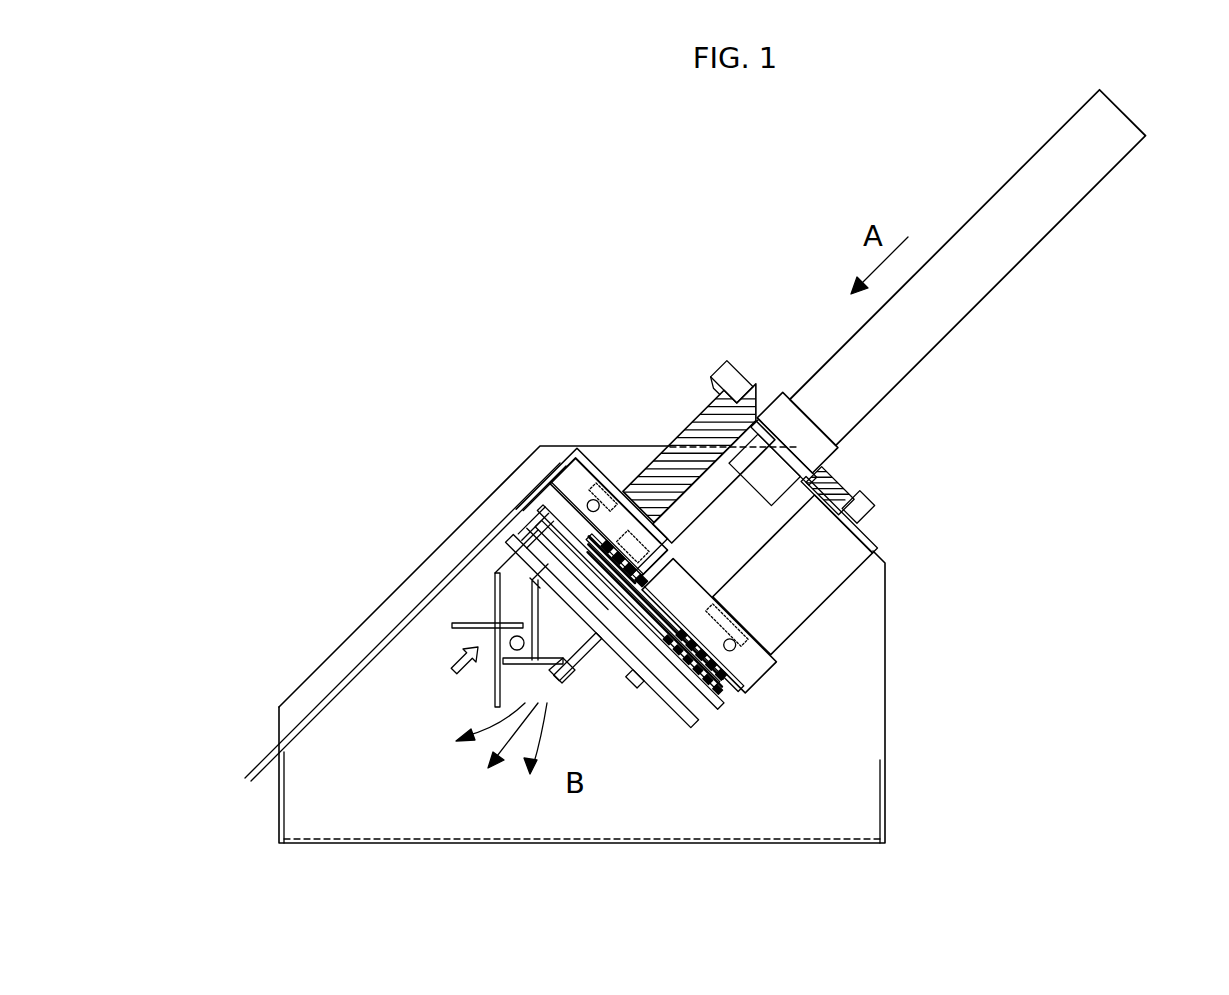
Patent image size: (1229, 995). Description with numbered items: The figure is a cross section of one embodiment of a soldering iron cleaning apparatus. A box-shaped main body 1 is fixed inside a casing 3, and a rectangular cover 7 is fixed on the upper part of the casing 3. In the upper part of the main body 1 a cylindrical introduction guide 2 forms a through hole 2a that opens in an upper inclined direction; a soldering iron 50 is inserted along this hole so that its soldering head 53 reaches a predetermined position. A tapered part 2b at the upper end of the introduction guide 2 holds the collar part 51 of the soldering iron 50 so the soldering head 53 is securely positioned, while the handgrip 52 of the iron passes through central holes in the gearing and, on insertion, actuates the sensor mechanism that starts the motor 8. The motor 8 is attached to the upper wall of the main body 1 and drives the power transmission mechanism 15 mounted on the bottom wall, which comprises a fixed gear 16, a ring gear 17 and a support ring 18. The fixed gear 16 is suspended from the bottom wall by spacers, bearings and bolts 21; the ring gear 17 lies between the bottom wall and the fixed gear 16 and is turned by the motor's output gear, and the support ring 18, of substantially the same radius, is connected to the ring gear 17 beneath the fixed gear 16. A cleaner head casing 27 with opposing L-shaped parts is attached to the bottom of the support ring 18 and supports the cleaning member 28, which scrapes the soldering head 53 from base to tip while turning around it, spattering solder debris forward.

The main body 1 is at (592, 472).
The introduction guide 2 is at (736, 366).
The through hole 2a is at (702, 487).
The tapered part 2b is at (762, 398).
The casing 3 is at (322, 845).
The rectangular cover 7 is at (347, 677).
The motor 8 is at (820, 577).
The power transmission mechanism 15 is at (528, 518).
The fixed gear 16 is at (728, 706).
The ring gear 17 is at (734, 700).
The support ring 18 is at (697, 720).
The bolts 21 is at (637, 686).
The cleaner head casing 27 is at (507, 582).
The cleaning member 28 is at (496, 704).
The soldering iron 50 is at (1132, 118).
The collar part 51 is at (833, 456).
The handgrip 52 is at (727, 522).
The soldering head 53 is at (590, 662).